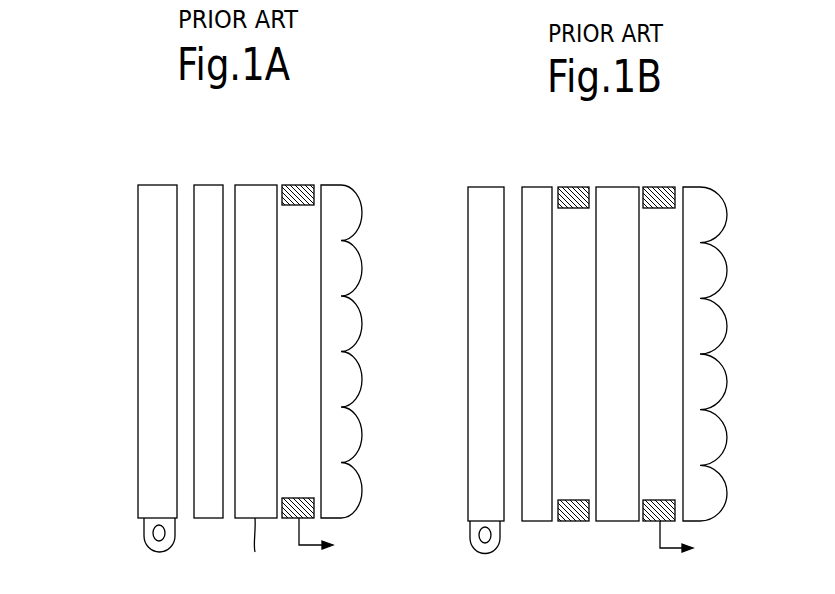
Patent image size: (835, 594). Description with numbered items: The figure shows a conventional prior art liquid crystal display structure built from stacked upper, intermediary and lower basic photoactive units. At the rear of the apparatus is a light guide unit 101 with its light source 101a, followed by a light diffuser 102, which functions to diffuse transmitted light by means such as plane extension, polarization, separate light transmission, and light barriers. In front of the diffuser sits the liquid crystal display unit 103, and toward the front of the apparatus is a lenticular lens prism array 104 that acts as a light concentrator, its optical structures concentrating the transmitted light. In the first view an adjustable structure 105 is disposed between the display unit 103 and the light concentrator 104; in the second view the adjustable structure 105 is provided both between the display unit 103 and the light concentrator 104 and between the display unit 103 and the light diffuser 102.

In FIG. 1A, the light guide unit 101 is at (138, 285).
In FIG. 1B, the light guide unit 101 is at (468, 300).
In FIG. 1A, the light source 101a is at (143, 532).
In FIG. 1B, the light source 101a is at (470, 535).
In FIG. 1A, the light diffuser 102 is at (207, 185).
In FIG. 1B, the light diffuser 102 is at (534, 187).
In FIG. 1A, the liquid crystal display unit 103 is at (252, 185).
In FIG. 1B, the liquid crystal display unit 103 is at (613, 187).
In FIG. 1A, the lenticular lens prism array 104 is at (340, 185).
In FIG. 1B, the lenticular lens prism array 104 is at (723, 210).
In FIG. 1A, the adjustable structure 105 is at (293, 185).
In FIG. 1B, the adjustable structure 105 is at (660, 187).